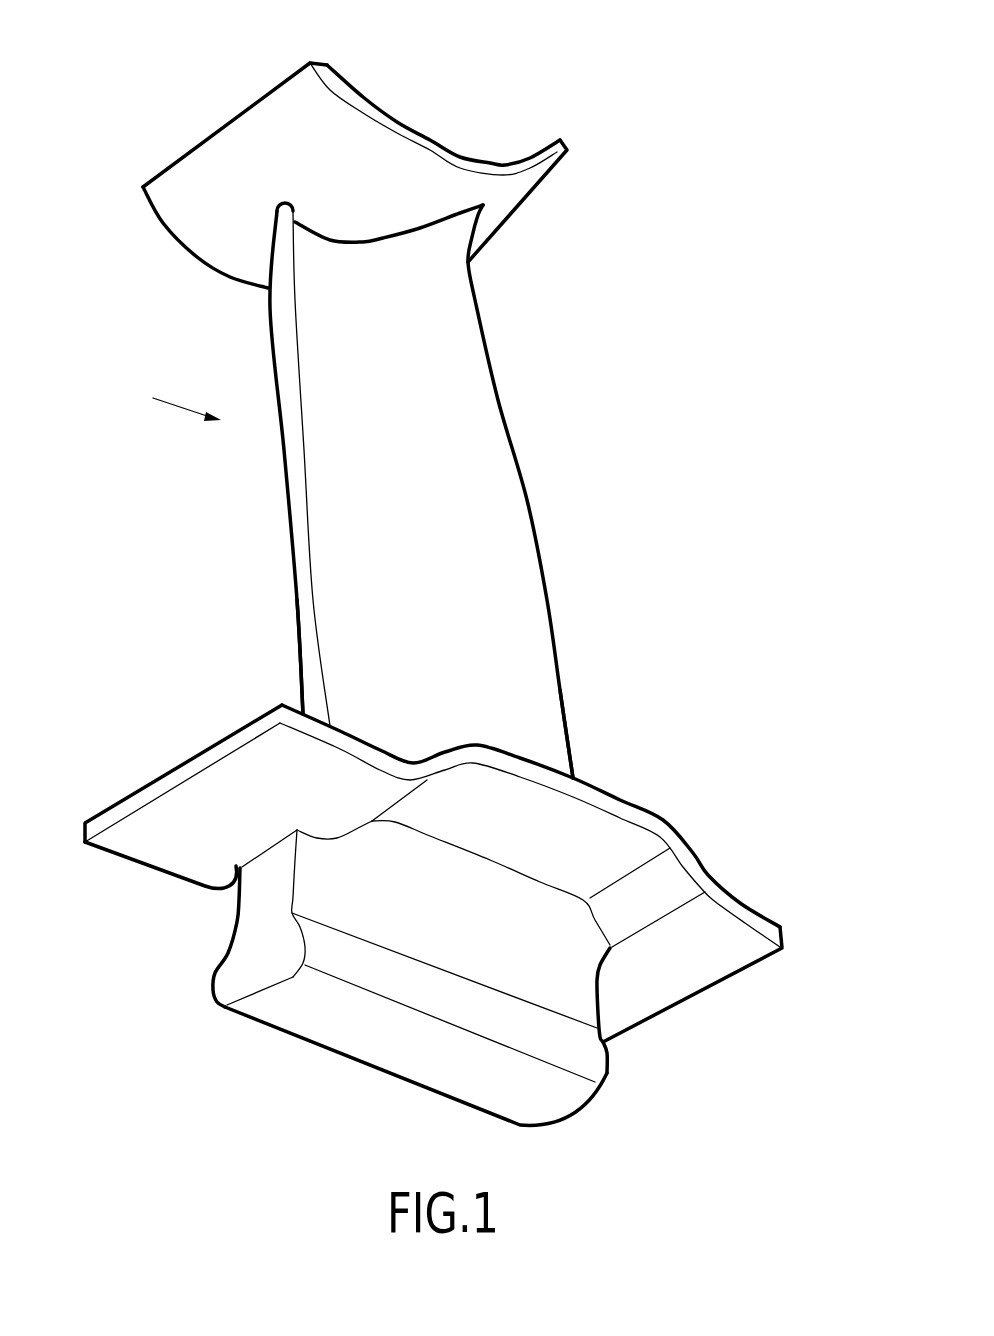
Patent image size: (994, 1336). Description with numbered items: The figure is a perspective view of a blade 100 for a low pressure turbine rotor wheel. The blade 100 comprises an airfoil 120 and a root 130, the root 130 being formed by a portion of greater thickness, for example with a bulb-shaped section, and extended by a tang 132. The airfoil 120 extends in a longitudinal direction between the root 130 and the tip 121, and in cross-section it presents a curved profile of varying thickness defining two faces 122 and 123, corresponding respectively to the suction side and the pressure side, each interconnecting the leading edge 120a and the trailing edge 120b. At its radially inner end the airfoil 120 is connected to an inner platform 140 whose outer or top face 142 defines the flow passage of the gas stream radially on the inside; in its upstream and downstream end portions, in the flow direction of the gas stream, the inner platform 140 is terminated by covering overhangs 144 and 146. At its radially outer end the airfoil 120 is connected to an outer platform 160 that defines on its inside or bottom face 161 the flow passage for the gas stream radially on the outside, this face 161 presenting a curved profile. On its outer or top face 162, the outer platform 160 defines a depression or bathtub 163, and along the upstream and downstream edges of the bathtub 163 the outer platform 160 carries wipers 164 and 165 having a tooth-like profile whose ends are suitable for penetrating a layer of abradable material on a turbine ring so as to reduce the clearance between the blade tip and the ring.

The blade 100 is at (576, 393).
The airfoil 120 is at (501, 567).
The leading edge 120a is at (310, 627).
The trailing edge 120b is at (563, 678).
The tip 121 is at (435, 230).
The suction side face 122 is at (283, 476).
The pressure side face 123 is at (498, 505).
The root 130 is at (319, 1054).
The tang 132 is at (568, 998).
The inner platform 140 is at (726, 878).
The outer face of inner platform 142 is at (607, 792).
The covering overhang 144 is at (185, 763).
The covering overhang 146 is at (727, 980).
The outer platform 160 is at (512, 223).
The inside face of outer platform 161 is at (368, 215).
The outer face of outer platform 162 is at (393, 122).
The bathtub 163 is at (442, 148).
The wiper 164 is at (545, 185).
The wiper 165 is at (221, 128).